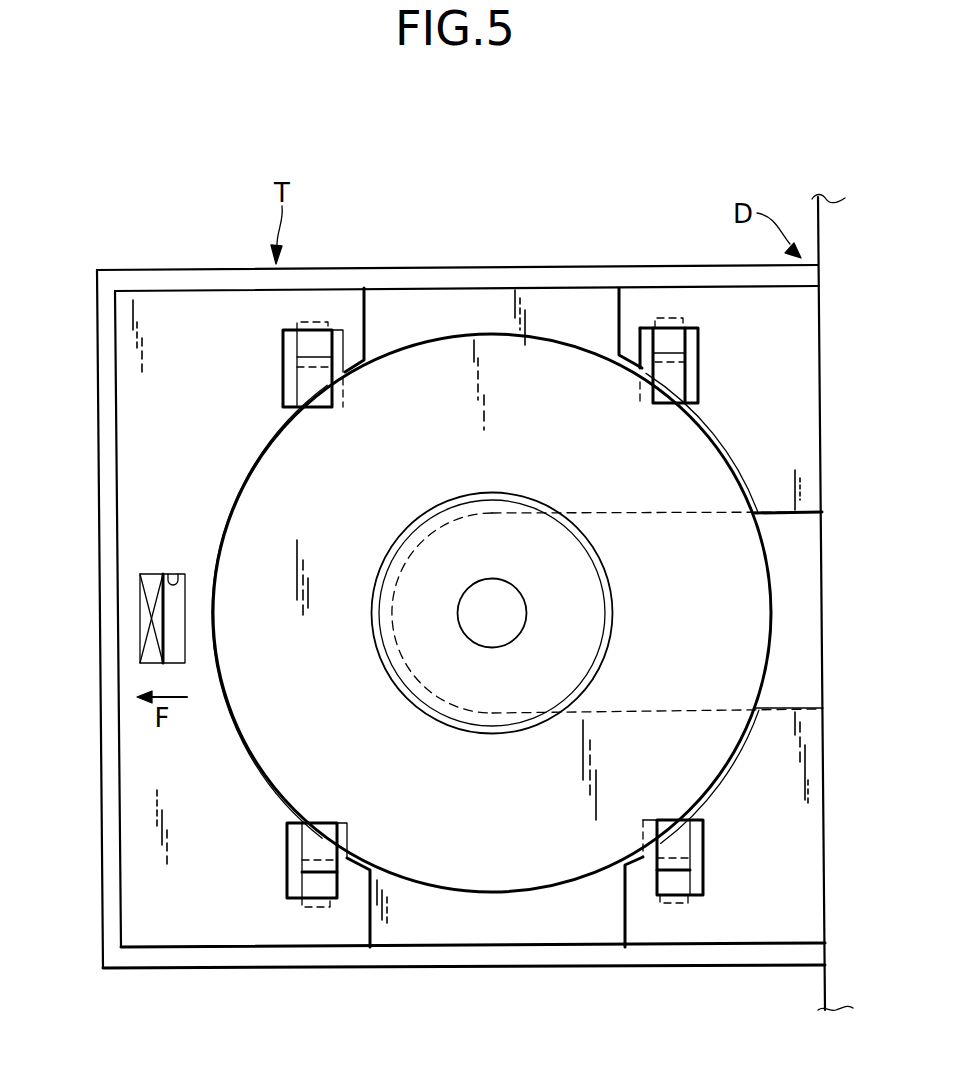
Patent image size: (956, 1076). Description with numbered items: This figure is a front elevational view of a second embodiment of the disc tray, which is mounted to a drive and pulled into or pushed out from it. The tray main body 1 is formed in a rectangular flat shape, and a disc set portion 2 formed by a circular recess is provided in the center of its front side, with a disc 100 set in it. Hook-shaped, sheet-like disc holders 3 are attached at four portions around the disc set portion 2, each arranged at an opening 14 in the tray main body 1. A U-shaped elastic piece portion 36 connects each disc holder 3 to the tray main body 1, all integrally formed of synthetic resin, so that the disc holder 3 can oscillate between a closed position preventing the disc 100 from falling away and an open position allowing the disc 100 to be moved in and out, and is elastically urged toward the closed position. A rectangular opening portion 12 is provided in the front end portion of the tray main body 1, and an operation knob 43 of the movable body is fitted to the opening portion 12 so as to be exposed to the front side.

The tray main body 1 is at (458, 268).
The disc set portion 2 is at (268, 471).
The disc holder 3 is at (297, 381).
The opening portion 12 is at (176, 574).
The opening 14 is at (283, 346).
The elastic piece portion 36 is at (330, 346).
The operation knob 43 is at (143, 612).
The disc 100 is at (712, 482).